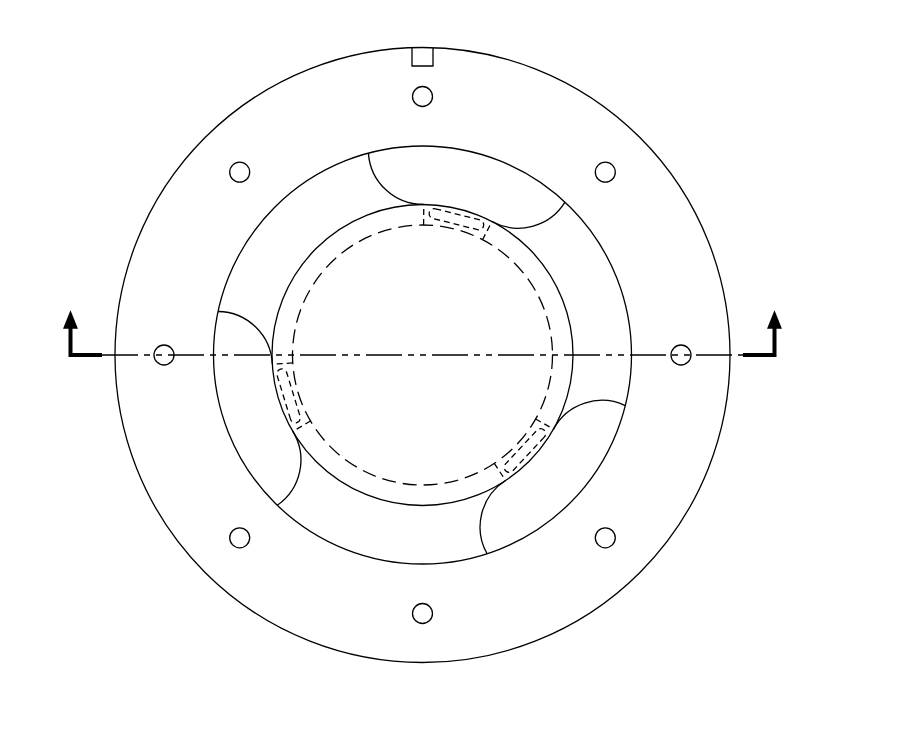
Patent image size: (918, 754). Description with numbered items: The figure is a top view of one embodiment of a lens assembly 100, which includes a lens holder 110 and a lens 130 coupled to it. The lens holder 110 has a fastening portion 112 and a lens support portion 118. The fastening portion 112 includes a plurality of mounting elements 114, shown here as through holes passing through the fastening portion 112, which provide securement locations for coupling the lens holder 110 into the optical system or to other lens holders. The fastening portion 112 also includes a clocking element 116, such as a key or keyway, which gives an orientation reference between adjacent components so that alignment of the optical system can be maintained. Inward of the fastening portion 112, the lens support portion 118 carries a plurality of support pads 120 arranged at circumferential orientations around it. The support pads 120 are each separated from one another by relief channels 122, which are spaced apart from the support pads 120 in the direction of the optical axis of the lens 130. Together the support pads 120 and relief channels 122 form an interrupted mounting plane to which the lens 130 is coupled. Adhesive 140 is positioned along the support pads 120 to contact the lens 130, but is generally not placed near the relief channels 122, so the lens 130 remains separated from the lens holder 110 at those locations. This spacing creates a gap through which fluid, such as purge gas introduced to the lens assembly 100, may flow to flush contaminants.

The lens assembly 100 is at (700, 92).
The lens holder 110 is at (118, 224).
The fastening portion 112 is at (658, 534).
The mounting elements 114 is at (239, 162).
The clocking element 116 is at (421, 46).
The lens support portion 118 is at (468, 187).
The support pads 120 is at (497, 178).
The relief channels 122 is at (240, 283).
The lens 130 is at (570, 390).
The adhesive 140 is at (455, 210).